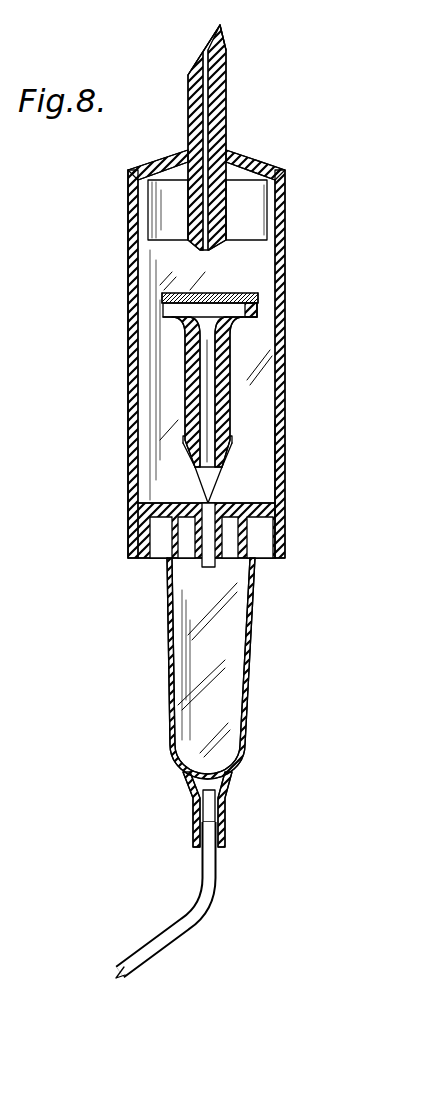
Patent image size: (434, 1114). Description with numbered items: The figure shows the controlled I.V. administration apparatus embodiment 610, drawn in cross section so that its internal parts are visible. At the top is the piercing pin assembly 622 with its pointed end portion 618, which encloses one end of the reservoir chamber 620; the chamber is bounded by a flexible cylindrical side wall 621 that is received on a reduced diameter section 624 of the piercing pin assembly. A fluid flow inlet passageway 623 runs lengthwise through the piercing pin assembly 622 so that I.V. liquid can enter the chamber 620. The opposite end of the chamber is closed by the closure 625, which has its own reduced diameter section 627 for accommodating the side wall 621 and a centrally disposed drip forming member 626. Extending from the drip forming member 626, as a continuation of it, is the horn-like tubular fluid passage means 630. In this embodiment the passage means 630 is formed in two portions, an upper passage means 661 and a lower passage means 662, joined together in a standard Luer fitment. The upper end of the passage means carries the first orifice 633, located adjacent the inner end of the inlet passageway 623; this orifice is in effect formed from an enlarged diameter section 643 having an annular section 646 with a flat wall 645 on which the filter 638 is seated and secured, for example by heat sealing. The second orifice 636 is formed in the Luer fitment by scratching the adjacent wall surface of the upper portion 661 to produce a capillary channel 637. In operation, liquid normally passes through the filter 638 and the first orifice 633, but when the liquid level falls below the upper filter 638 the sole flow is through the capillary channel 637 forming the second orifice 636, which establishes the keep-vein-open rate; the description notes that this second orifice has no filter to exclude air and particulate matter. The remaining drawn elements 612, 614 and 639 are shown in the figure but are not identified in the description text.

The controlled I.V. administration apparatus embodiment 610 is at (125, 240).
The syringe barrel 612 is at (252, 650).
The delivery tube 614 is at (190, 938).
The pointed end portion 618 is at (224, 38).
The reservoir chamber 620 is at (286, 407).
The flexible cylindrical side wall 621 is at (286, 500).
The piercing pin assembly 622 is at (227, 88).
The fluid flow inlet passageway 623 is at (206, 57).
The reduced diameter section 624 is at (266, 224).
The closure 625 is at (274, 556).
The drip forming member 626 is at (200, 565).
The reduced diameter section 627 is at (278, 543).
The fluid passage means 630 is at (232, 362).
The first orifice 633 is at (258, 318).
The second orifice 636 is at (228, 443).
The capillary channel 637 is at (222, 465).
The filter 638 is at (258, 294).
The passage 639 is at (205, 385).
The enlarged diameter section 643 is at (163, 317).
The flat wall 645 is at (162, 297).
The annular section 646 is at (258, 305).
The upper passage means 661 is at (187, 351).
The lower passage means 662 is at (188, 483).